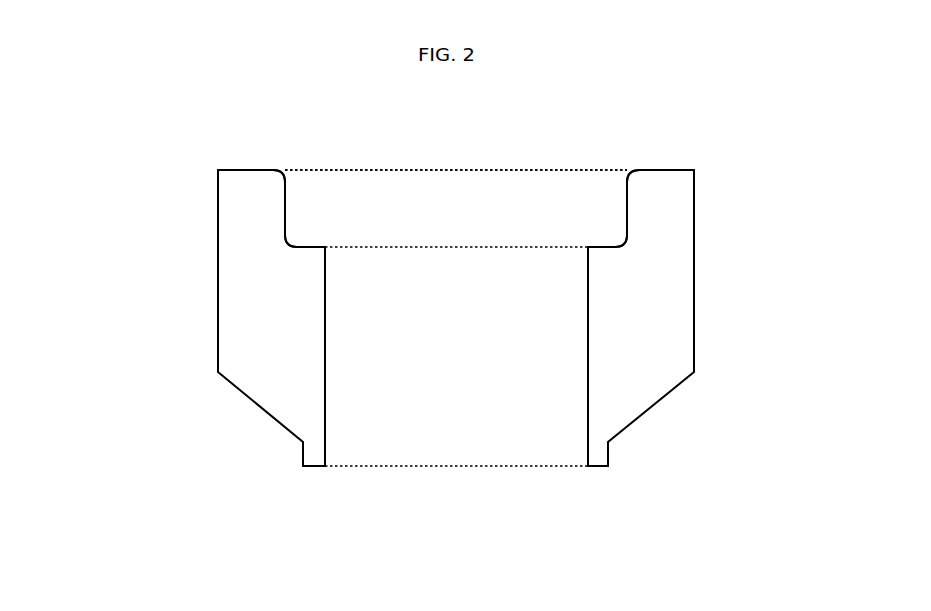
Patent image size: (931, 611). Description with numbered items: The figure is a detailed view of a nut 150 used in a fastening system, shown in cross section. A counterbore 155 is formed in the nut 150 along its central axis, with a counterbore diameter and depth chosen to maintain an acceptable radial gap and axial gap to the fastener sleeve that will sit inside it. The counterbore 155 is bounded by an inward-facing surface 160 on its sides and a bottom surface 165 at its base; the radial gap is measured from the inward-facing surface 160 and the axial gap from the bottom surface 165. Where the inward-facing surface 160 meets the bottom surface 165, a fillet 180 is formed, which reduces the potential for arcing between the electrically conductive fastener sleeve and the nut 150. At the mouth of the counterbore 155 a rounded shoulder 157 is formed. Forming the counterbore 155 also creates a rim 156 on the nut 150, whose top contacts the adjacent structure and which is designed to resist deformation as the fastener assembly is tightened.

The nut 150 is at (468, 390).
The counterbore 155 is at (465, 192).
The rim 156 is at (243, 214).
The rounded shoulder 157 is at (282, 168).
The inward-facing surface 160 is at (628, 211).
The bottom surface 165 is at (605, 248).
The fillet 180 is at (288, 237).